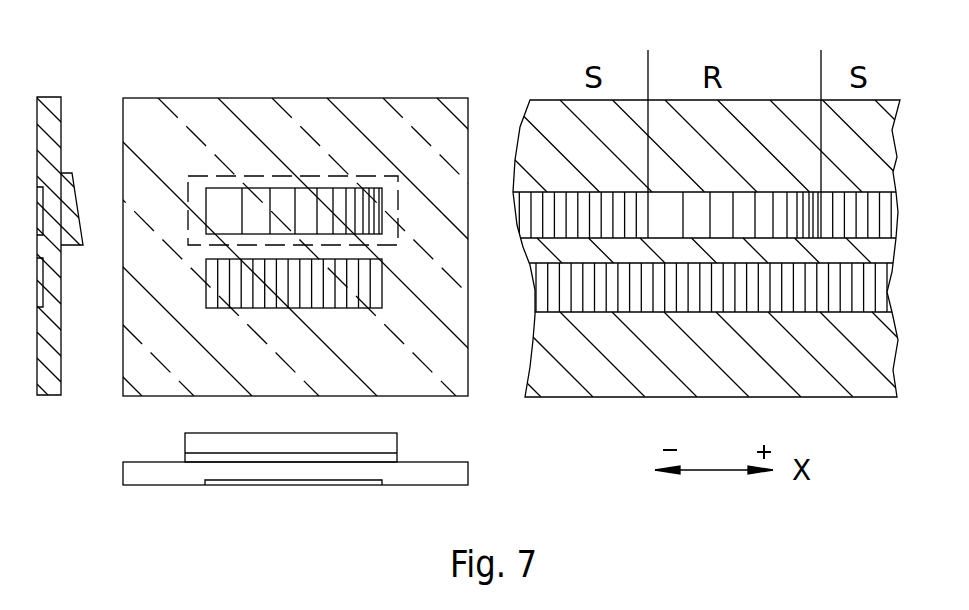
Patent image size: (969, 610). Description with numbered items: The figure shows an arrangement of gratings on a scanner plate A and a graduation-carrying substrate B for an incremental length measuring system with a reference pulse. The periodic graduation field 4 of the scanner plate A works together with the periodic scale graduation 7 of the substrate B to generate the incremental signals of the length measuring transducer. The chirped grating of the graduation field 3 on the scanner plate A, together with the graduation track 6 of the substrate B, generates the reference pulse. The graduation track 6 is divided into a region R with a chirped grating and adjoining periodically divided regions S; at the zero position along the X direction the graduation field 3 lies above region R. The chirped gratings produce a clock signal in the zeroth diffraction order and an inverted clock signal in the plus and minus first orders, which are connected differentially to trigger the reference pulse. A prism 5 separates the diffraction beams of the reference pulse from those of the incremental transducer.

The scanner plate A is at (152, 106).
The graduation-carrying substrate B is at (543, 112).
The graduation field 3 is at (280, 207).
The periodic graduation field 4 is at (237, 284).
The prism 5 is at (187, 210).
The graduation track 6 is at (547, 213).
The periodic scale graduation 7 is at (553, 288).